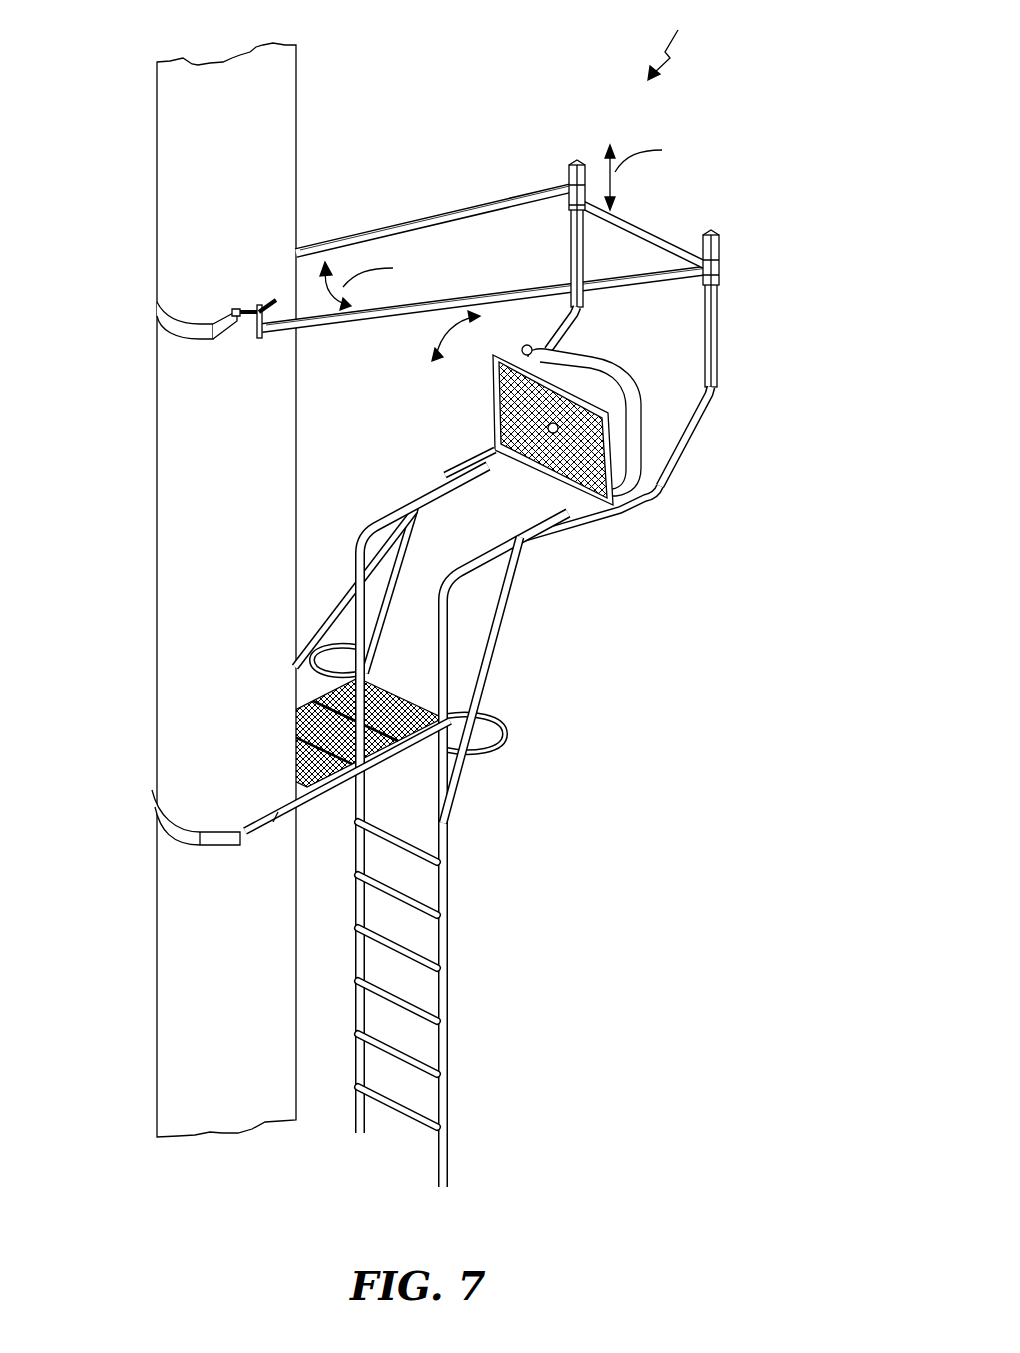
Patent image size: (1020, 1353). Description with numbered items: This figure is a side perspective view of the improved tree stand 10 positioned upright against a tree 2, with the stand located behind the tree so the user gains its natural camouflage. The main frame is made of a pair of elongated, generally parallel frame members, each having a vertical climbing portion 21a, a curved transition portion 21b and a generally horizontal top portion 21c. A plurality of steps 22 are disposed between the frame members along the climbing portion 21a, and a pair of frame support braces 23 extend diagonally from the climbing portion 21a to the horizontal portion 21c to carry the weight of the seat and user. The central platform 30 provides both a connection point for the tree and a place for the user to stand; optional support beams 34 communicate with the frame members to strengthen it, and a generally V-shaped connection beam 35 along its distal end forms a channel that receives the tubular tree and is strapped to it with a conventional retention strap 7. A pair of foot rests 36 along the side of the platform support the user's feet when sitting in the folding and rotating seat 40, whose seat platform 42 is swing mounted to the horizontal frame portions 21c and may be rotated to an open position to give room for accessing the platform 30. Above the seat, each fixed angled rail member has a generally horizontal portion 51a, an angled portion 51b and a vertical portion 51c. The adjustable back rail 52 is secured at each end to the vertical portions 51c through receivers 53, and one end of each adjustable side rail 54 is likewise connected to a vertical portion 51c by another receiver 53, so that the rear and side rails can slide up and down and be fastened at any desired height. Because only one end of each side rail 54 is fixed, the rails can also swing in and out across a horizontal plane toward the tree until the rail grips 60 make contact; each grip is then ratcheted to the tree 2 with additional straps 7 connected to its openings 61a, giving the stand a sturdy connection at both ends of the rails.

The improved tree stand 10 is at (467, 593).
The tree 2 is at (236, 548).
The retention strap 7 is at (158, 312).
The vertical climbing portion 21a is at (473, 1052).
The curved transition portion 21b is at (346, 550).
The generally horizontal top portion 21c is at (537, 562).
The steps 22 is at (395, 1100).
The frame support braces 23 is at (487, 672).
The central platform 30 is at (316, 828).
The support beams 34 is at (322, 650).
The V-shaped connection beam 35 is at (293, 783).
The foot rests 36 is at (505, 733).
The folding and rotating seat 40 is at (527, 291).
The seat platform 42 is at (470, 397).
The horizontal portion 51a is at (465, 457).
The angled portion 51b is at (706, 408).
The vertical portion 51c is at (582, 307).
The adjustable back rail 52 is at (676, 247).
The receivers 53 is at (572, 200).
The adjustable side rails 54 is at (428, 220).
The rail grip 60 is at (233, 352).
The openings 61a is at (238, 310).